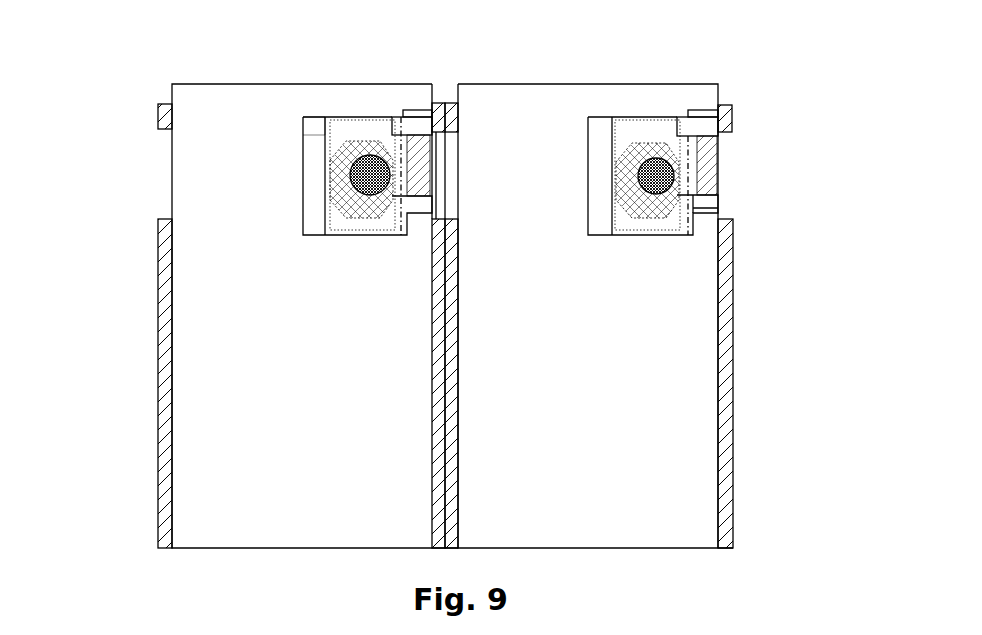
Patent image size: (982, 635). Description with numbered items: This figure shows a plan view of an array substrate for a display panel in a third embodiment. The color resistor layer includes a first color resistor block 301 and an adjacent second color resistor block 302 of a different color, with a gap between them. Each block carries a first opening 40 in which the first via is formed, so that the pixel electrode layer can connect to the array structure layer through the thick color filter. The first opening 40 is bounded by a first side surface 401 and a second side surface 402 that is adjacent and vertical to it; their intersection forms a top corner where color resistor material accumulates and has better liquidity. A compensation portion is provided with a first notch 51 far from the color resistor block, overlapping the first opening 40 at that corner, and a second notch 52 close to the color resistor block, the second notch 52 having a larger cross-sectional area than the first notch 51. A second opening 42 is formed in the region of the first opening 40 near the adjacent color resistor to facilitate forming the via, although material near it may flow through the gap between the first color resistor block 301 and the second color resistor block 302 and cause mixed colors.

The first color resistor block 301 is at (190, 361).
The second color resistor block 302 is at (705, 337).
The first opening 40 is at (237, 159).
The second opening 42 is at (705, 129).
The first side surface 401 is at (303, 157).
The second side surface 402 is at (368, 117).
The first notch 51 is at (311, 126).
The second notch 52 is at (703, 197).